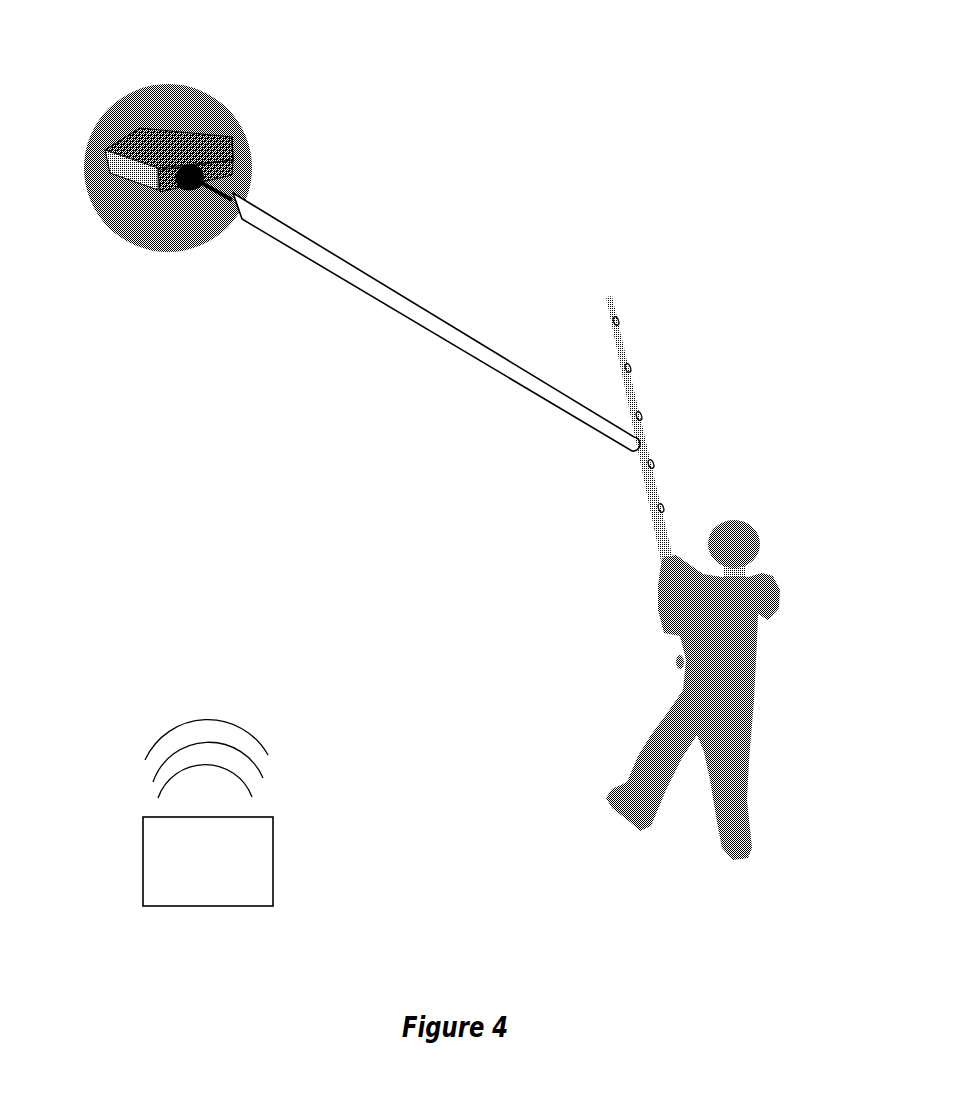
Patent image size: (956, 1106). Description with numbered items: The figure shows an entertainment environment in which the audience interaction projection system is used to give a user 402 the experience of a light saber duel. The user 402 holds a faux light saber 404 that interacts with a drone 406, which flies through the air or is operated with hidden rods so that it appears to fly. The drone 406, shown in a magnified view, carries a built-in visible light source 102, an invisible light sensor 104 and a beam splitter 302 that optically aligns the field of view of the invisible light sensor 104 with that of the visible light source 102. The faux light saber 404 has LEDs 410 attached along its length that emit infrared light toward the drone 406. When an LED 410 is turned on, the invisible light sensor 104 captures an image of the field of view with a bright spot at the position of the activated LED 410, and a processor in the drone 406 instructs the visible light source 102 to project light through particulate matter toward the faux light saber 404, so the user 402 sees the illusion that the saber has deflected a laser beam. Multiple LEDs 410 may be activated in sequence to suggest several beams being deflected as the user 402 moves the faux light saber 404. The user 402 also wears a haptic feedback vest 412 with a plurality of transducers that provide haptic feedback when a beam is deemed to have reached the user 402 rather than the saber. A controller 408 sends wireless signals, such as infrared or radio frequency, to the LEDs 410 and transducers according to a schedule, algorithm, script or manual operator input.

The visible light source 102 is at (104, 150).
The invisible light sensor 104 is at (186, 190).
The beam splitter 302 is at (234, 143).
The user 402 is at (737, 522).
The faux light saber 404 is at (658, 520).
The drone 406 is at (122, 98).
The controller 408 is at (143, 860).
The LEDs 410 is at (618, 320).
The haptic feedback vest 412 is at (677, 663).